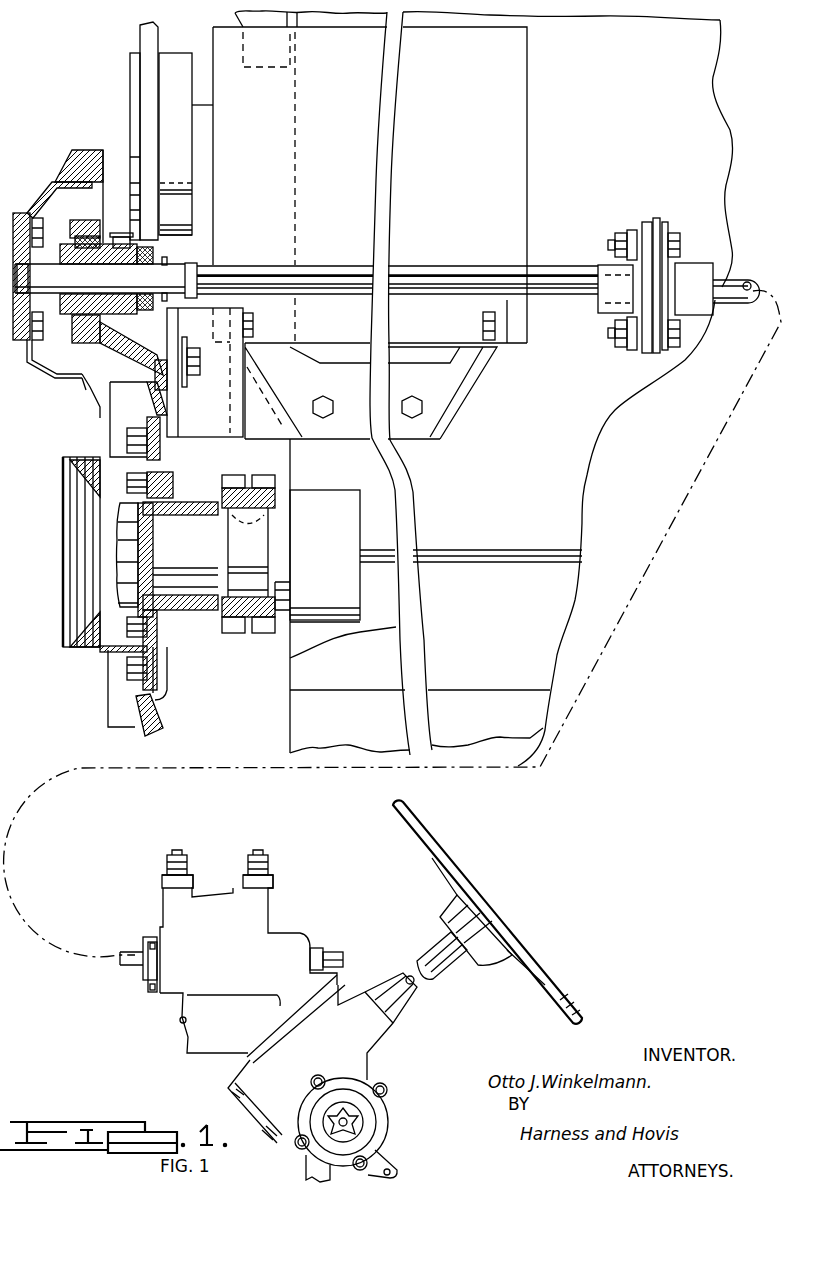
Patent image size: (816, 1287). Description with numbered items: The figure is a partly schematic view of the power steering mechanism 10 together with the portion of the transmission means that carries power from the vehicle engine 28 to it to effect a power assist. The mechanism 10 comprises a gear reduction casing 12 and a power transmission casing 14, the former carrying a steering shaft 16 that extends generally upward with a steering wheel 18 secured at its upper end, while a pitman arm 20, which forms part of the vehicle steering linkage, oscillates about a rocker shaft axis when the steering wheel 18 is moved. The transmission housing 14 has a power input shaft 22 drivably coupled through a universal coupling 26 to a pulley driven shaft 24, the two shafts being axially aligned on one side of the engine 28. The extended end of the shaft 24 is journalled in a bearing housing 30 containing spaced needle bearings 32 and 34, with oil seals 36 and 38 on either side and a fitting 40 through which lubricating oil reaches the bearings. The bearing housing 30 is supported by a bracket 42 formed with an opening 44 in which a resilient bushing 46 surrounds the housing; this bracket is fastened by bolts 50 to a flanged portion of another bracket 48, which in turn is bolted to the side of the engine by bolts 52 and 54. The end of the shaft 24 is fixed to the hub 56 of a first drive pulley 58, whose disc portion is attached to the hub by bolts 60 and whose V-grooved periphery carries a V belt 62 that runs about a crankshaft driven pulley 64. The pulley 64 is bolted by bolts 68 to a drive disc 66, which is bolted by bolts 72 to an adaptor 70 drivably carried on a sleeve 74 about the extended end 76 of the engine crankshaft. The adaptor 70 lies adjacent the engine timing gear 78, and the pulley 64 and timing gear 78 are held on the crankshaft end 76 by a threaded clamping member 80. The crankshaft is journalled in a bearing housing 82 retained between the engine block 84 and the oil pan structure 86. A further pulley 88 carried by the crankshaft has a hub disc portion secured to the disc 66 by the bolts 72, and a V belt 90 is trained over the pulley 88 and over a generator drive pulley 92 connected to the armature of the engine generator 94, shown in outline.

The power steering mechanism 10 is at (251, 951).
The gear reduction casing 12 is at (318, 1046).
The power transmission casing 14 is at (222, 962).
The steering shaft 16 is at (443, 947).
The steering wheel 18 is at (557, 983).
The pitman arm 20 is at (310, 1167).
The power input shaft 22 is at (728, 282).
The pulley driven shaft 24 is at (547, 275).
The universal coupling 26 is at (675, 226).
The vehicle engine 28 is at (528, 462).
The bearing housing 30 is at (110, 233).
The needle bearing 32 is at (93, 256).
The needle bearing 34 is at (135, 290).
The oil seal 36 is at (82, 280).
The oil seal 38 is at (118, 330).
The fitting 40 is at (132, 234).
The bracket 42 is at (115, 355).
The opening 44 is at (92, 220).
The resilient bushing 46 is at (77, 238).
The bracket 48 is at (180, 413).
The bolts 50 is at (190, 377).
The bolts 52 is at (345, 389).
The bolts 54 is at (253, 323).
The hub 56 is at (22, 213).
The first drive pulley 58 is at (50, 190).
The bolts 60 is at (30, 348).
The V belt 62 is at (85, 157).
The crankshaft driven pulley 64 is at (72, 652).
The drive disc 66 is at (155, 658).
The bolts 68 is at (158, 673).
The adaptor 70 is at (192, 614).
The bolts 72 is at (133, 481).
The sleeve 74 is at (200, 498).
The crankshaft end 76 is at (198, 560).
The engine timing gear 78 is at (268, 633).
The threaded clamping member 80 is at (118, 557).
The bearing housing 82 is at (343, 536).
The engine block 84 is at (557, 527).
The engine oil pan structure 86 is at (563, 628).
The pulley 88 is at (158, 713).
The V belt 90 is at (148, 33).
The generator drive pulley 92 is at (180, 55).
The engine generator 94 is at (462, 158).